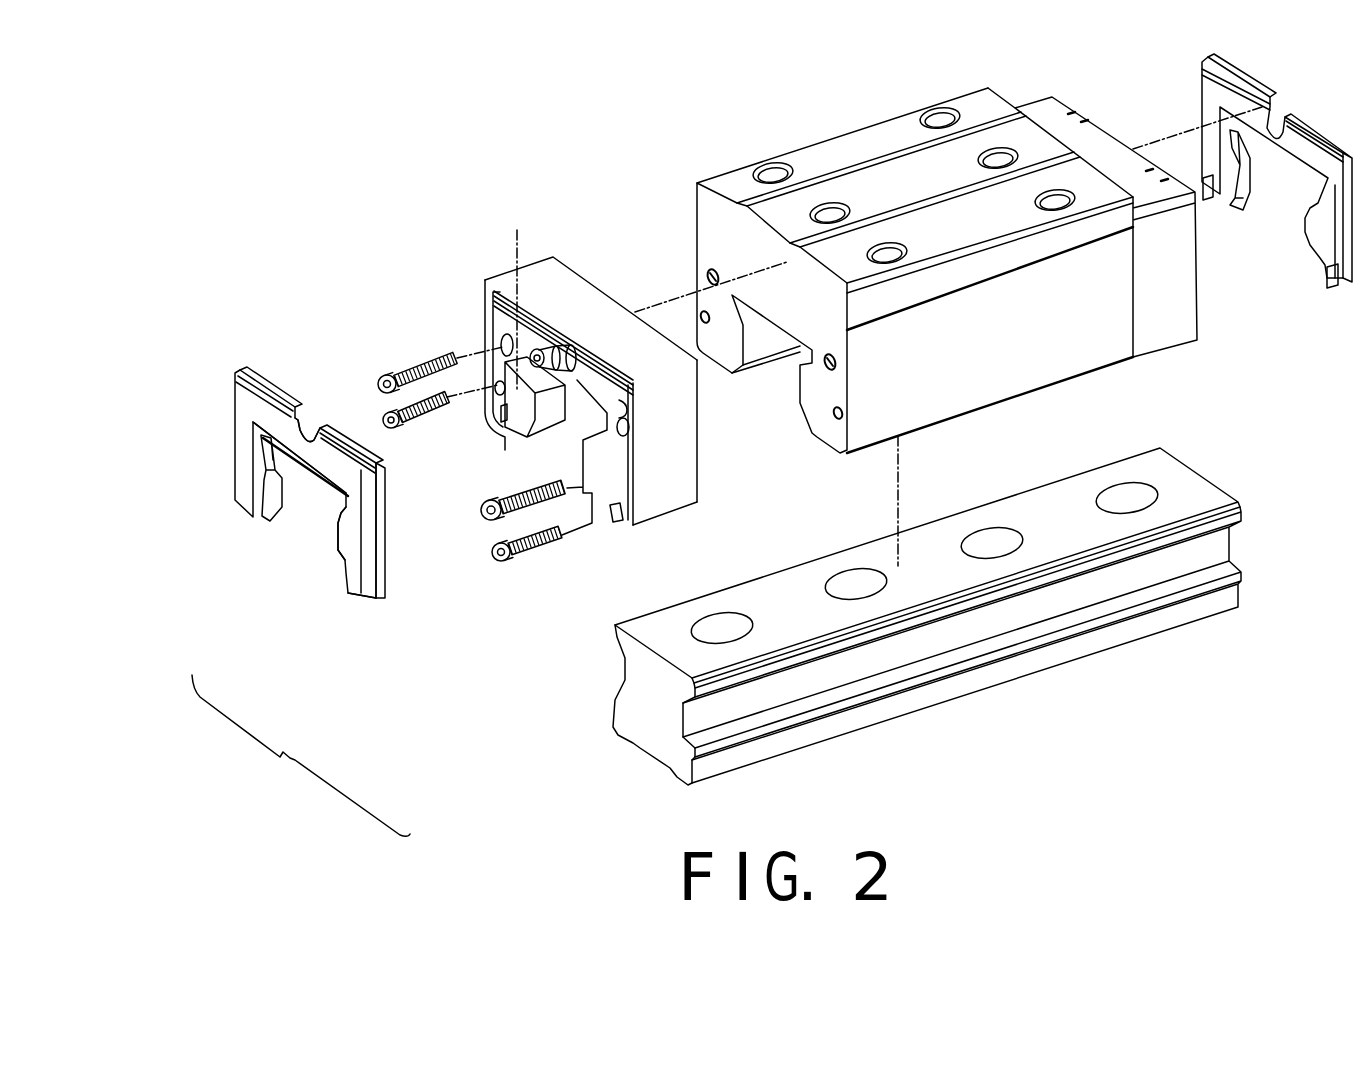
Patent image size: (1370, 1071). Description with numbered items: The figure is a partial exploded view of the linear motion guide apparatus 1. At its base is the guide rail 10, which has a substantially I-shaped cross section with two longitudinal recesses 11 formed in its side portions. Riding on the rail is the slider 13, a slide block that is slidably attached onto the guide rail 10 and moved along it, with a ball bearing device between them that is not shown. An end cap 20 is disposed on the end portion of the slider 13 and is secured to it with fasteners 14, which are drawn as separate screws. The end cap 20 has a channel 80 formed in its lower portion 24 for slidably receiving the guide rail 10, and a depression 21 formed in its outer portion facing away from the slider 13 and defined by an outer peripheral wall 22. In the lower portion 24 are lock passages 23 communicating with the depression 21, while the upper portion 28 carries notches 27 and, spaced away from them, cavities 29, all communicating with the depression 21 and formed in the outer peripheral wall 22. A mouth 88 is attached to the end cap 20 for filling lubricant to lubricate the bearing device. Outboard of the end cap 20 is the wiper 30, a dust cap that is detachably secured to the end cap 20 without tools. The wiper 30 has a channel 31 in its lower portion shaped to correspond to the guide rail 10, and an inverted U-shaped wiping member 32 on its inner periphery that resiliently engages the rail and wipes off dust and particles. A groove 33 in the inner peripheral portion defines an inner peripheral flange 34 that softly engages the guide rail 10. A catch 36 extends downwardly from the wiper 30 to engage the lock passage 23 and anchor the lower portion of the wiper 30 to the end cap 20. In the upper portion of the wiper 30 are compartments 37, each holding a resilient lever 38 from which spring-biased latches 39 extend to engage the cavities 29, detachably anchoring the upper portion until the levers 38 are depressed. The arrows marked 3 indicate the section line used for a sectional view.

The linear motion guide apparatus 1 is at (752, 445).
The section line of FIG. 3 is at (517, 230).
The guide rail 10 is at (970, 616).
The longitudinal recesses 11 is at (1218, 543).
The slider 13 is at (1020, 378).
The fasteners 14 is at (533, 542).
The end caps 20 is at (1158, 340).
The depression 21 is at (630, 421).
The outer peripheral wall 22 is at (577, 379).
The lock passages 23 is at (618, 522).
The lower portion 24 is at (695, 507).
The notches 27 is at (505, 297).
The upper portion 28 is at (547, 256).
The cavities 29 is at (612, 361).
The wipers 30 is at (269, 482).
The channel 31 is at (299, 543).
The wiping member 32 is at (352, 557).
The groove 33 is at (258, 502).
The inner peripheral flange 34 is at (337, 540).
The catch 36 is at (1330, 280).
The compartments 37 is at (268, 380).
The lever 38 is at (321, 429).
The latches 39 is at (363, 457).
The channel 80 is at (563, 448).
The mouth 88 is at (633, 391).